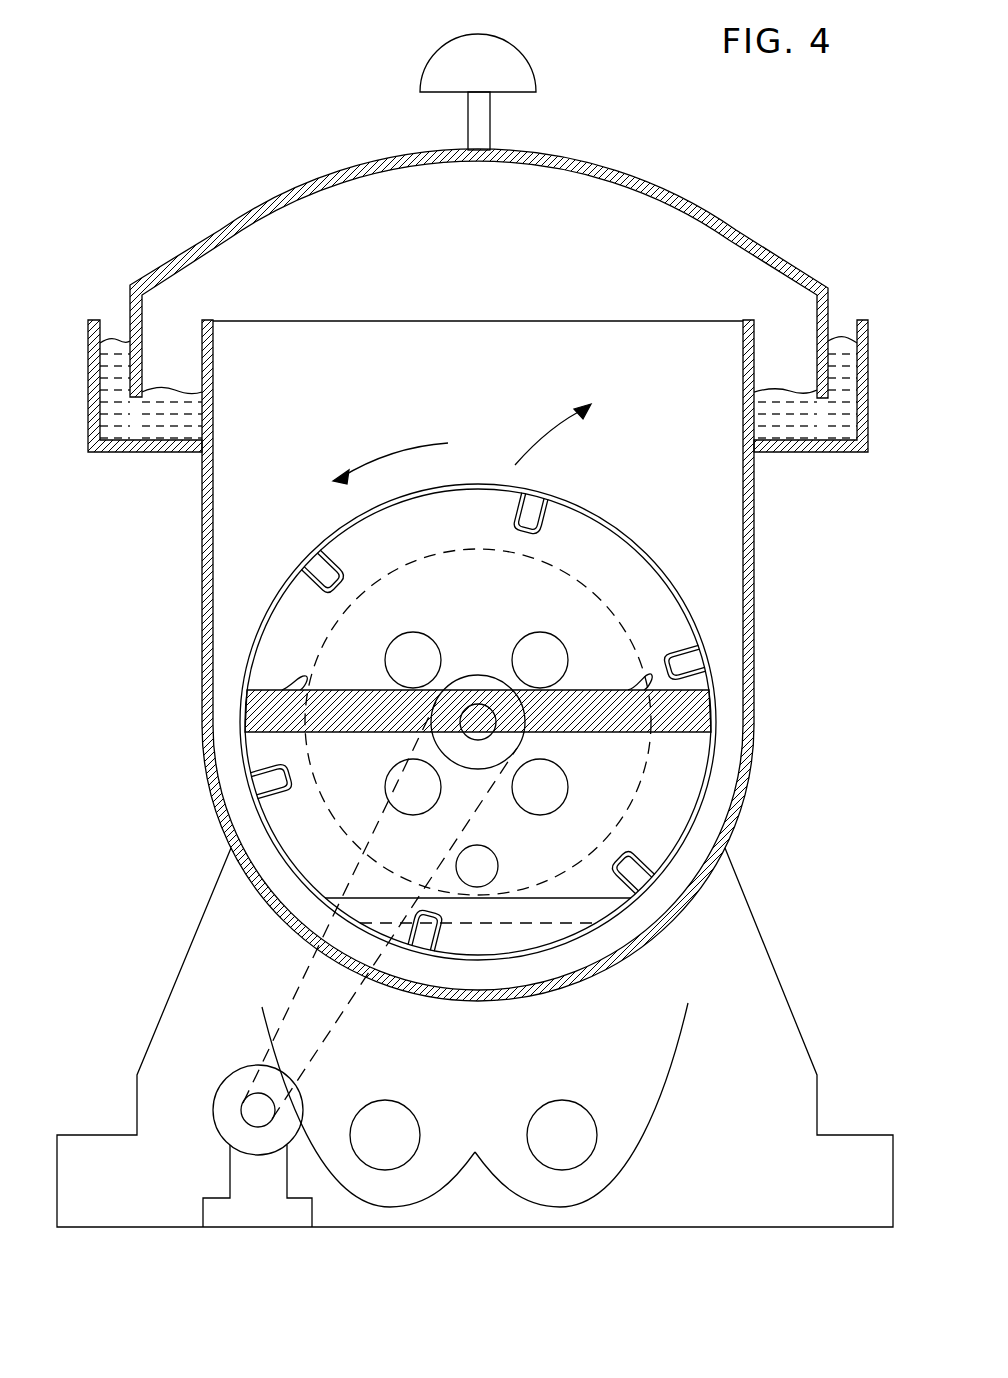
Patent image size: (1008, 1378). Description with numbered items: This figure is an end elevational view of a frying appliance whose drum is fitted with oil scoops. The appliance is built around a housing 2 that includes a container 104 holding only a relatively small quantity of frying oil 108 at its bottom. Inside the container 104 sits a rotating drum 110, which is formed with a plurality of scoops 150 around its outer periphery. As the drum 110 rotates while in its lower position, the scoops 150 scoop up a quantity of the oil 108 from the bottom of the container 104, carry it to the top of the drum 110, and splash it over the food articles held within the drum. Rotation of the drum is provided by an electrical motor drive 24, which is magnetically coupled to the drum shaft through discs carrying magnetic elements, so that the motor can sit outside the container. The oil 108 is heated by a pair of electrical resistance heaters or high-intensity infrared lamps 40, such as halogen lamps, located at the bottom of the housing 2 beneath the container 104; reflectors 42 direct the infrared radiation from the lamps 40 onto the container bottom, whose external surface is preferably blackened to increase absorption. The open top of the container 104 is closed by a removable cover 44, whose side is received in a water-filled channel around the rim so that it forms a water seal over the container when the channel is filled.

The housing 2 is at (770, 1070).
The electrical motor drive 24 is at (257, 1127).
The infrared radiation lamps 40 is at (383, 1160).
The reflectors 42 is at (600, 1178).
The removable cover 44 is at (322, 166).
The container 104 is at (202, 568).
The oil 108 is at (508, 938).
The drum 110 is at (578, 492).
The scoops 150 is at (325, 565).